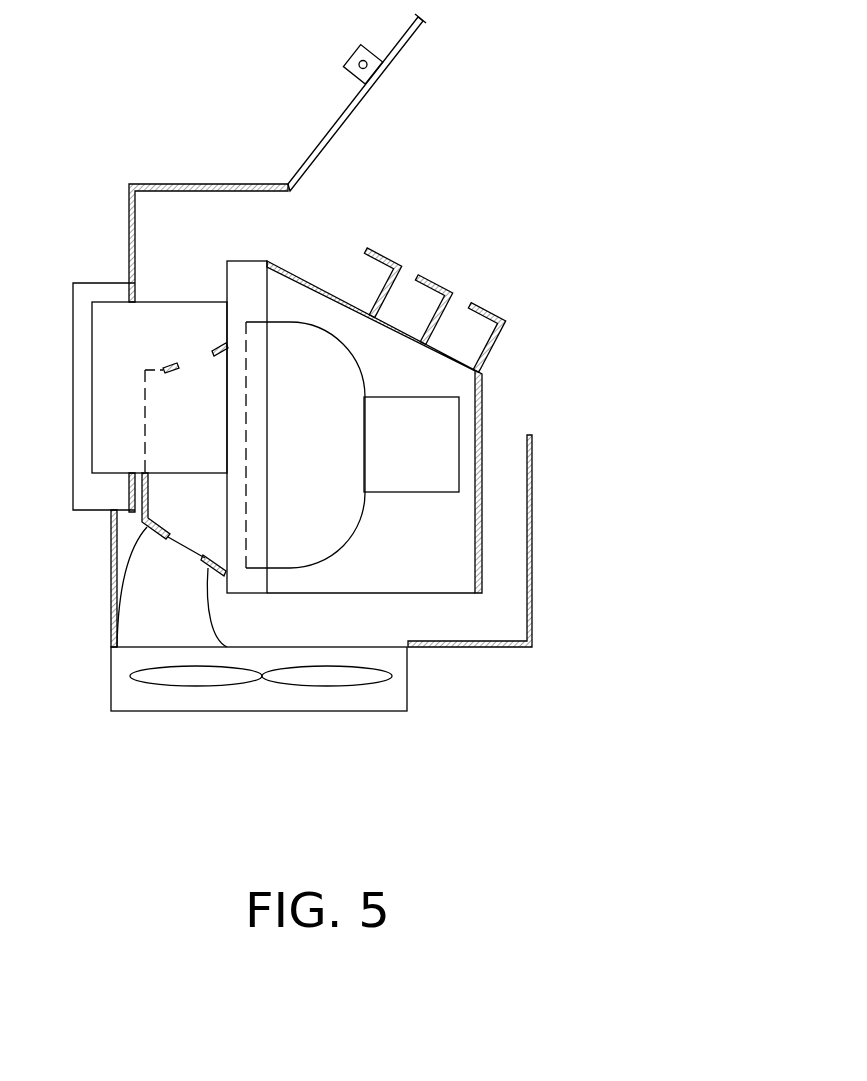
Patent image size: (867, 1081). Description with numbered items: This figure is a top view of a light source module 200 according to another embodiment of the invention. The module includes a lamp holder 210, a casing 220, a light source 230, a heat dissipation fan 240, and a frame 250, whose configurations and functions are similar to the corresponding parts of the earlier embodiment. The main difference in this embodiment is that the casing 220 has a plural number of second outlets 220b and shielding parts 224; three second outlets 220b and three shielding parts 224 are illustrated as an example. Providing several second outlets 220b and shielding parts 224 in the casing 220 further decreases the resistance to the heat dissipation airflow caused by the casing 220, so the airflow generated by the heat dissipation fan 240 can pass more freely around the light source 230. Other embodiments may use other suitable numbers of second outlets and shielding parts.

The light source module 200 is at (626, 393).
The lamp holder 210 is at (247, 270).
The casing 220 is at (362, 402).
The second outlets 220b is at (353, 313).
The shielding parts 224 is at (378, 259).
The light source 230 is at (310, 542).
The heat dissipation fan 240 is at (150, 712).
The frame 250 is at (110, 531).